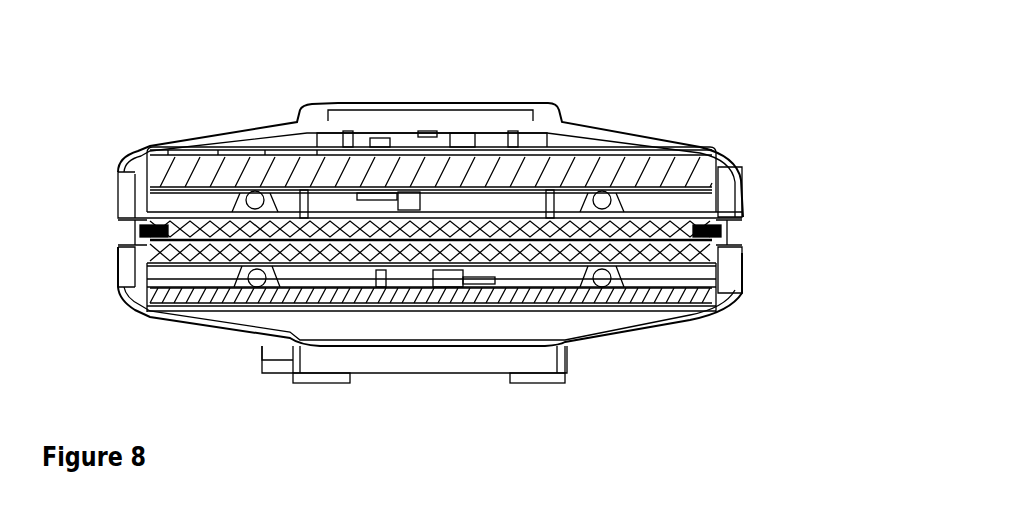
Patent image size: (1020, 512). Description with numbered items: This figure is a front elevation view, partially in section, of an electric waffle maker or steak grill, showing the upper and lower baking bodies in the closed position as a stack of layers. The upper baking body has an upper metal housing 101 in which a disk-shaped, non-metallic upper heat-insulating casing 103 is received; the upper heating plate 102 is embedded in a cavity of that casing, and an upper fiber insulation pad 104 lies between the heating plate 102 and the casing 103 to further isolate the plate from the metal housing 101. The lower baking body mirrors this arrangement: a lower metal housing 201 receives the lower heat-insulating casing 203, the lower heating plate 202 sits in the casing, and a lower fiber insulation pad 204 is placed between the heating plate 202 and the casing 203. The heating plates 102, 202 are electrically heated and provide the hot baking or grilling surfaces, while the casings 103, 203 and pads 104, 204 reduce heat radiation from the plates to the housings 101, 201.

The upper metal housing 101 is at (672, 138).
The upper heat-insulating casing 103 is at (700, 146).
The upper fiber insulation pad 104 is at (700, 174).
The upper heating plate 102 is at (727, 203).
The lower heating plate 202 is at (742, 262).
The lower fiber insulation pad 204 is at (741, 301).
The lower metal housing 201 is at (716, 306).
The lower heat-insulating casing 203 is at (686, 319).